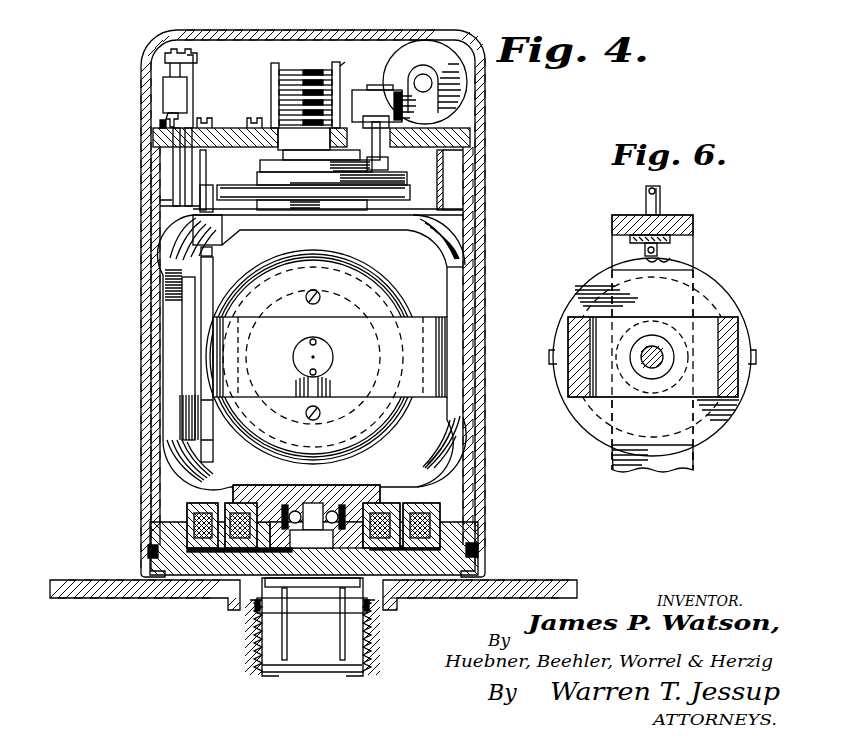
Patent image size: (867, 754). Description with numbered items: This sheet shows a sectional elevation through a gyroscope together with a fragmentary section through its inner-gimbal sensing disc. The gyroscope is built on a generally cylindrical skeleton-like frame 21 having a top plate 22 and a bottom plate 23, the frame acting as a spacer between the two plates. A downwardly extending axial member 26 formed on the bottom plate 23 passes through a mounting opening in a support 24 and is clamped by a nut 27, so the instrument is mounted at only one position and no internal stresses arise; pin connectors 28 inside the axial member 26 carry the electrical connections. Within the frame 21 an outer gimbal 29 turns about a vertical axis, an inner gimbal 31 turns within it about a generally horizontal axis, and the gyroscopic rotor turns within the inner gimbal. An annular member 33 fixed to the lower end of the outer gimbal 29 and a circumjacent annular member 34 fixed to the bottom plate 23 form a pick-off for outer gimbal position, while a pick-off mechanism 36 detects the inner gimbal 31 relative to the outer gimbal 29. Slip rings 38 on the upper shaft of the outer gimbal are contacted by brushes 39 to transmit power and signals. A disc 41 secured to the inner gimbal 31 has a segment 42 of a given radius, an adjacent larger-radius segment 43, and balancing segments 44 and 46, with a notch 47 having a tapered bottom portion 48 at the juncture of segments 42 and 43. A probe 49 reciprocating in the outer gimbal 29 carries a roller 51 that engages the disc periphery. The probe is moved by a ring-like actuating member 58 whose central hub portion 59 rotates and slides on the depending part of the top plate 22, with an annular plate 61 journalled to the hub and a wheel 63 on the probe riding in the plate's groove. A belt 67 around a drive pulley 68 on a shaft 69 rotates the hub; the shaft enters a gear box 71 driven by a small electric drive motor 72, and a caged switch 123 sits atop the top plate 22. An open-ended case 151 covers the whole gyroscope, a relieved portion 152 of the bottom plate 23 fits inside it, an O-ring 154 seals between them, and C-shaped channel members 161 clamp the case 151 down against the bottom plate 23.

In FIG. 4, the frame 21 is at (473, 163).
In FIG. 4, the top plate 22 is at (255, 128).
In FIG. 4, the bottom plate 23 is at (415, 588).
In FIG. 4, the support 24 is at (553, 580).
In FIG. 4, the axial member 26 is at (380, 637).
In FIG. 4, the nut 27 is at (230, 610).
In FIG. 4, the pin connectors 28 is at (341, 660).
In FIG. 4, the outer gimbal 29 is at (462, 267).
In FIG. 6, the outer gimbal 29 is at (680, 225).
In FIG. 4, the inner gimbal 31 is at (406, 324).
In FIG. 6, the inner gimbal 31 is at (568, 336).
In FIG. 4, the annular member 33 is at (378, 502).
In FIG. 4, the annular member 34 is at (442, 505).
In FIG. 4, the pick-off mechanism 36 is at (167, 307).
In FIG. 4, the slip rings 38 is at (332, 70).
In FIG. 4, the brushes 39 is at (288, 70).
In FIG. 4, the disc 41 is at (203, 388).
In FIG. 6, the disc 41 is at (697, 297).
In FIG. 6, the segment 42 is at (733, 303).
In FIG. 6, the segment 43 is at (577, 283).
In FIG. 6, the segment 44 is at (592, 432).
In FIG. 6, the segment 46 is at (718, 428).
In FIG. 6, the notch 47 is at (660, 250).
In FIG. 6, the tapered bottom portion 48 is at (646, 263).
In FIG. 4, the probe 49 is at (175, 203).
In FIG. 6, the probe 49 is at (648, 202).
In FIG. 4, the roller 51 is at (212, 251).
In FIG. 6, the roller 51 is at (630, 244).
In FIG. 4, the actuating member 58 is at (255, 172).
In FIG. 4, the central hub portion 59 is at (266, 158).
In FIG. 4, the annular plate 61 is at (447, 197).
In FIG. 6, the wheel 63 is at (660, 186).
In FIG. 4, the belt 67 is at (403, 181).
In FIG. 4, the drive pulley 68 is at (396, 165).
In FIG. 4, the shaft 69 is at (375, 139).
In FIG. 4, the gear box 71 is at (384, 103).
In FIG. 4, the electric drive motor 72 is at (422, 55).
In FIG. 4, the caged switch 123 is at (170, 90).
In FIG. 4, the case 151 is at (476, 297).
In FIG. 4, the relieved portion 152 is at (480, 548).
In FIG. 4, the O-ring 154 is at (148, 548).
In FIG. 4, the channel members 161 is at (150, 571).